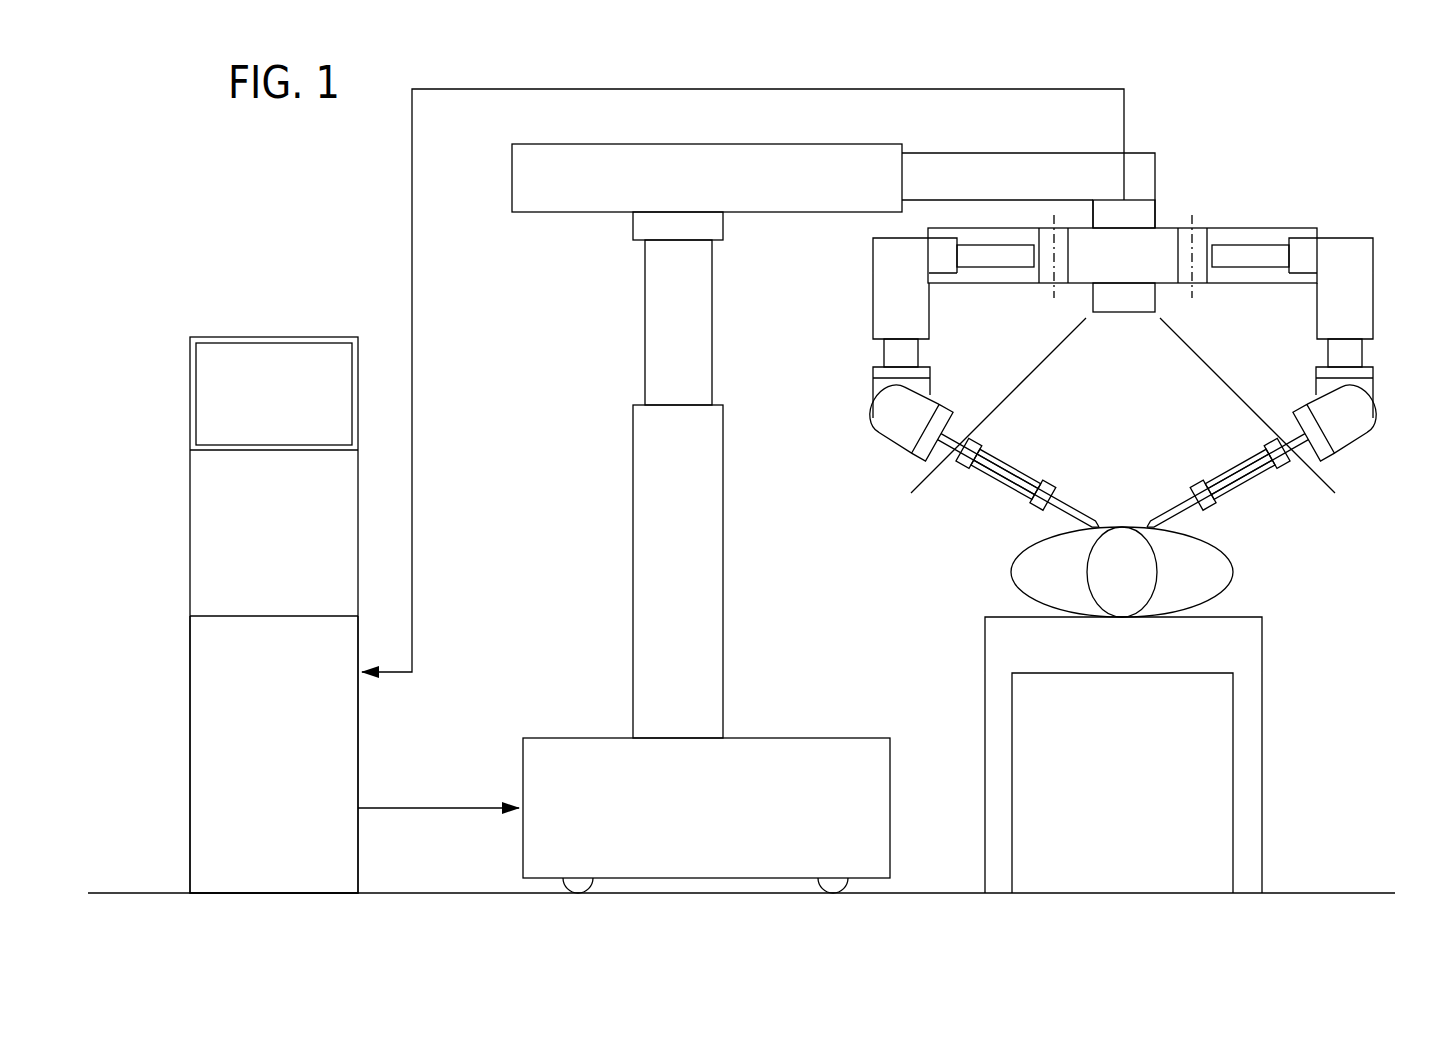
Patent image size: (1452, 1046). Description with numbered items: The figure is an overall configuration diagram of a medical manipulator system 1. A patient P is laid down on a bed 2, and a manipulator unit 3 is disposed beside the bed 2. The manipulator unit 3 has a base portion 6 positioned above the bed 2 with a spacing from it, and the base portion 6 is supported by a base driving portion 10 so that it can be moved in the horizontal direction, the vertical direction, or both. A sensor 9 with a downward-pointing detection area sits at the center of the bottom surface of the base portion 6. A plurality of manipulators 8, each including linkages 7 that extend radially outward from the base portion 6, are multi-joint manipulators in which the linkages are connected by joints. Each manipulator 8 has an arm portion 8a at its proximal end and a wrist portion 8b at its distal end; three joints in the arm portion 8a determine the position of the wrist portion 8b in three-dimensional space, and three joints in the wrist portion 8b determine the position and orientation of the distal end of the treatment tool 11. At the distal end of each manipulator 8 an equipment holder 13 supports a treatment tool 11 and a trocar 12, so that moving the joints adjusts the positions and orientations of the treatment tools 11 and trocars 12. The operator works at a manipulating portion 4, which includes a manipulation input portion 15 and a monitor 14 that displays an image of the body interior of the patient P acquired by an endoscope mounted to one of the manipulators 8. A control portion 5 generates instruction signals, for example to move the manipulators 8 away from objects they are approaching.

The medical manipulator system 1 is at (1306, 157).
The bed 2 is at (1271, 710).
The manipulator unit 3 is at (1207, 217).
The manipulating portion 4 is at (180, 467).
The control portion 5 is at (180, 754).
The base portion 6 is at (1165, 227).
The linkages 7 is at (968, 284).
The manipulators 8 is at (949, 384).
The arm portion 8a is at (855, 268).
The wrist portion 8b is at (874, 459).
The sensor 9 is at (1125, 313).
The base driving portion 10 is at (632, 550).
The treatment tool 11 is at (1006, 466).
The trocar 12 is at (1066, 505).
The equipment holder 13 is at (988, 488).
The monitor 14 is at (268, 336).
The manipulation input portion 15 is at (189, 550).
The patient P is at (1235, 573).